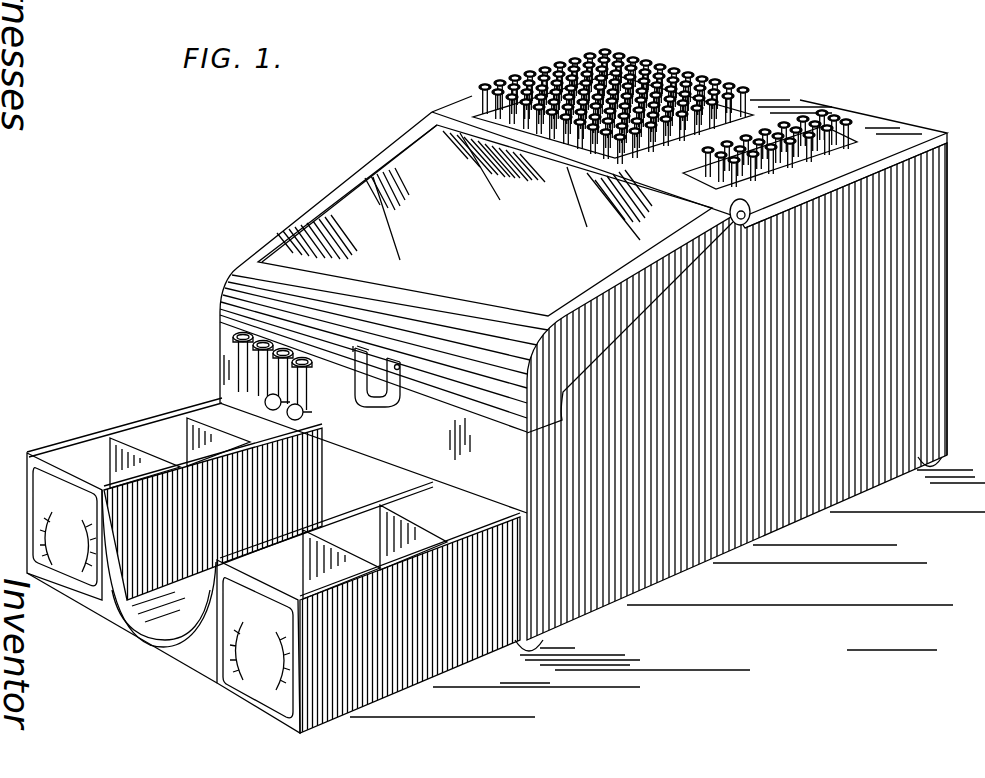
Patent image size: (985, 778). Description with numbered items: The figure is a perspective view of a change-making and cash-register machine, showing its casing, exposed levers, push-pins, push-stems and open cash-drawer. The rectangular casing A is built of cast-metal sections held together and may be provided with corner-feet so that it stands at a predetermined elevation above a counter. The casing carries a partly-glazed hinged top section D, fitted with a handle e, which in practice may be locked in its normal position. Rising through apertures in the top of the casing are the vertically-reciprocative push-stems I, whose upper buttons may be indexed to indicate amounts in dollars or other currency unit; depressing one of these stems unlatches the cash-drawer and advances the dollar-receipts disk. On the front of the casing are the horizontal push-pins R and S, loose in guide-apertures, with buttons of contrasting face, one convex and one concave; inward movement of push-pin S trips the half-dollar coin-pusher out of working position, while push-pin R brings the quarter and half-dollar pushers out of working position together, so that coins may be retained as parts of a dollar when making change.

The casing A is at (737, 391).
The hinged top section D is at (286, 227).
The push-stems I is at (843, 132).
The push-pin R is at (267, 397).
The push-pin S is at (305, 410).
The handle e is at (392, 408).